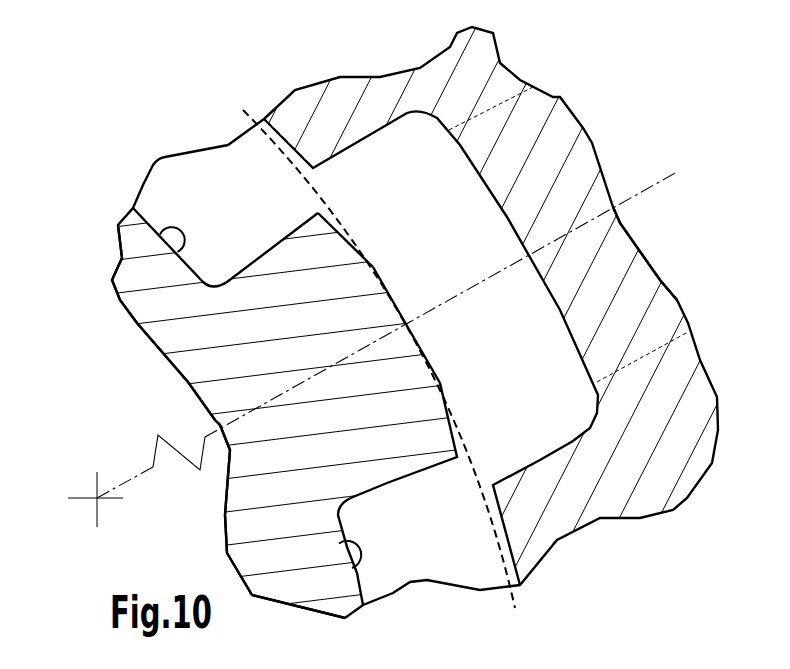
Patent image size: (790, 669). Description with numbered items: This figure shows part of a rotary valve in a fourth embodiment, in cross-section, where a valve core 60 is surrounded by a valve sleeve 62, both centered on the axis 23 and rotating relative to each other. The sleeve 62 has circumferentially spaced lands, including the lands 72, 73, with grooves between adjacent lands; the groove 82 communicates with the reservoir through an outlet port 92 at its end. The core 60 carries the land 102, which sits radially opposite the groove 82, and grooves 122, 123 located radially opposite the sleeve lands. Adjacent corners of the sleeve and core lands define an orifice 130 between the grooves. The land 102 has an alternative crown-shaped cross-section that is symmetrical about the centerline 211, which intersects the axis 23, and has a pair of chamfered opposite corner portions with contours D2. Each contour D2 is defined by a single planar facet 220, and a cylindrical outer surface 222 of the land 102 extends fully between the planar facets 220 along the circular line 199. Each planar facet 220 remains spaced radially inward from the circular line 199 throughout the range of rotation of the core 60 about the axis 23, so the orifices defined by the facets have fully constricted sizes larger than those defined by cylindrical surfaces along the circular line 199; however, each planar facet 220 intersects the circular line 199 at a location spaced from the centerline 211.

The axis 23 is at (97, 498).
The valve core 60 is at (147, 316).
The valve sleeve 62 is at (330, 88).
The land 72 is at (353, 137).
The land 73 is at (617, 480).
The groove 82 is at (572, 405).
The outlet port 92 is at (632, 295).
The land 102 is at (278, 350).
The groove 122 is at (160, 234).
The groove 123 is at (339, 544).
The orifice 130 is at (343, 193).
The circular line 199 is at (308, 182).
The centerline 211 is at (637, 191).
The planar facet 220 is at (346, 238).
The cylindrical outer surface 222 is at (417, 338).
The contour D2 is at (286, 238).